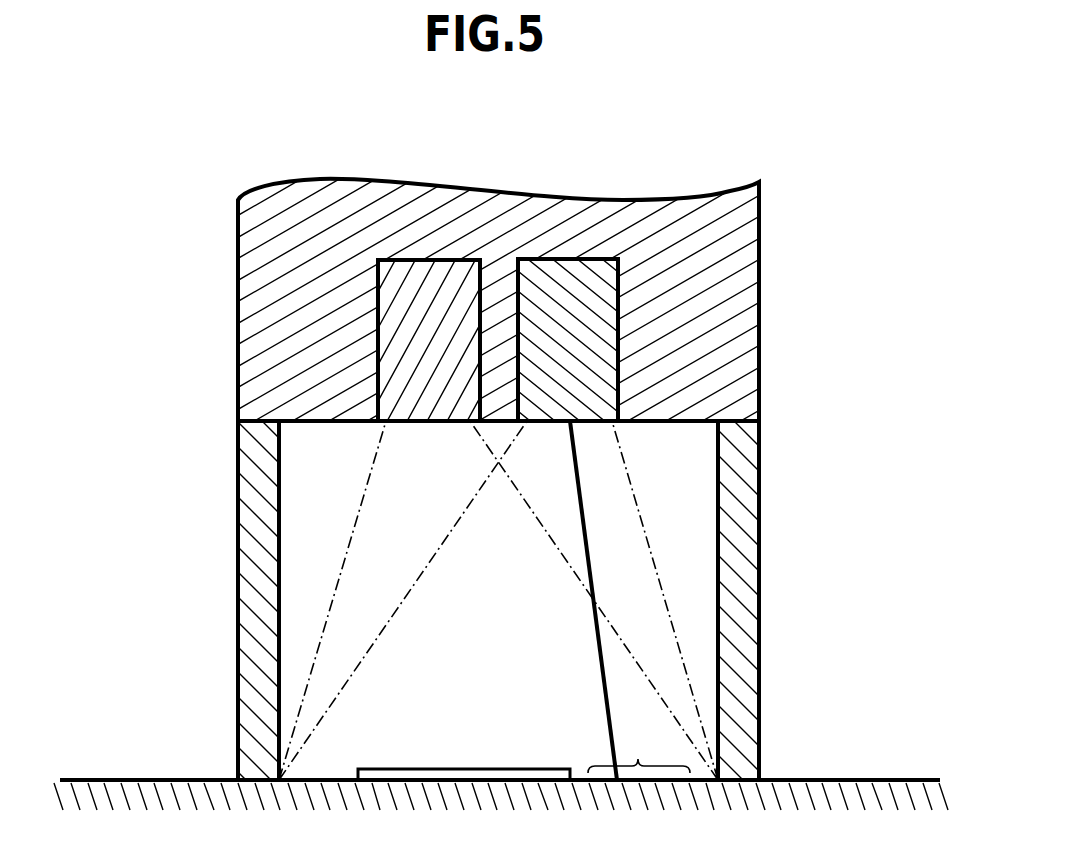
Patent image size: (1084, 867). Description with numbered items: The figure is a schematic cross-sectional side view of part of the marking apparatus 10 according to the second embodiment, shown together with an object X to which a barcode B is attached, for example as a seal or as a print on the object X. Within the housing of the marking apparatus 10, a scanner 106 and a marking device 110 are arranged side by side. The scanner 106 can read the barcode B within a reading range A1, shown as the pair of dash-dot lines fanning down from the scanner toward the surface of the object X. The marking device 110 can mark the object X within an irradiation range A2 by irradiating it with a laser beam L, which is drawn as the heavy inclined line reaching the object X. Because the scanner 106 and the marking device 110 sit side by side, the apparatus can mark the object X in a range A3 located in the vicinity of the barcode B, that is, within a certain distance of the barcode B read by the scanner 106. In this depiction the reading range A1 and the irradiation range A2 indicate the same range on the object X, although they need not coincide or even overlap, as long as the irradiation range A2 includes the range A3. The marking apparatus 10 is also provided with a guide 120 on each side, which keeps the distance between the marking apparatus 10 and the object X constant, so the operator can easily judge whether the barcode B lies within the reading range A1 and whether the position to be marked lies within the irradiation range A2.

The marking apparatus 10 is at (754, 314).
The scanner 106 is at (386, 377).
The marking device 110 is at (610, 383).
The guide 120 is at (242, 577).
The object X is at (865, 780).
The barcode B is at (453, 770).
The reading range A1 is at (354, 523).
The irradiation range A2 is at (639, 524).
The range in the vicinity of the barcode A3 is at (639, 745).
The laser beam L is at (584, 498).